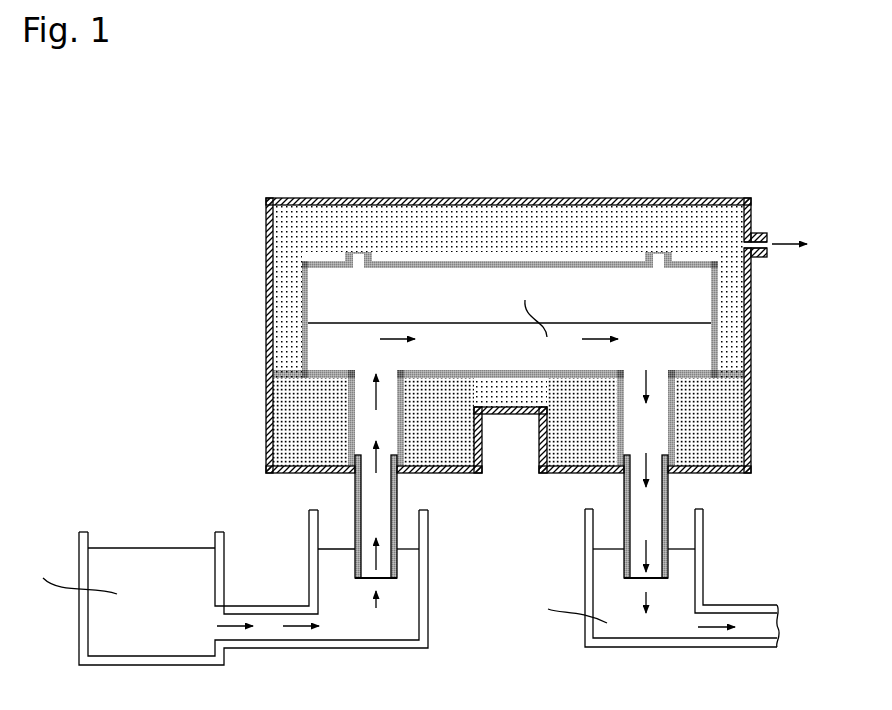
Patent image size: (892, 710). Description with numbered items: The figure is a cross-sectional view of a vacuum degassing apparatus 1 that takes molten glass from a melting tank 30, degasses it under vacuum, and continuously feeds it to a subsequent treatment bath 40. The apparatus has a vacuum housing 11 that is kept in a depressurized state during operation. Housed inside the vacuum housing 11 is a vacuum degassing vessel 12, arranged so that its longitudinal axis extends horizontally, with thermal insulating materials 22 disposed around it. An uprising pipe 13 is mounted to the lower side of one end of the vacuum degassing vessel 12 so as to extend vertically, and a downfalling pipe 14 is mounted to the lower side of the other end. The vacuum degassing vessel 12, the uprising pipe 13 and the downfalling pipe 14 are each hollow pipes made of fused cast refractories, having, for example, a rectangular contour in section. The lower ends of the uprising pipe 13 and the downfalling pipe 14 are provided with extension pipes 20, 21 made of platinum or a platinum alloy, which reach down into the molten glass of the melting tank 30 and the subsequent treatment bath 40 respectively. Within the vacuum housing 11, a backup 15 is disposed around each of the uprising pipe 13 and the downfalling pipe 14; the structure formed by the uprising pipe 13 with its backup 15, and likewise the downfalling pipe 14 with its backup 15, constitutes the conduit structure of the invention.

The vacuum degassing apparatus 1 is at (509, 296).
The vacuum housing 11 is at (395, 199).
The vacuum degassing vessel 12 is at (465, 262).
The thermal insulating materials 22 is at (535, 240).
The uprising pipe 13 is at (407, 425).
The downfalling pipe 14 is at (672, 430).
The backup 15 is at (300, 405).
The extension pipe 20 is at (355, 486).
The extension pipe 21 is at (668, 486).
The melting tank 30 is at (82, 538).
The subsequent treatment bath 40 is at (792, 627).